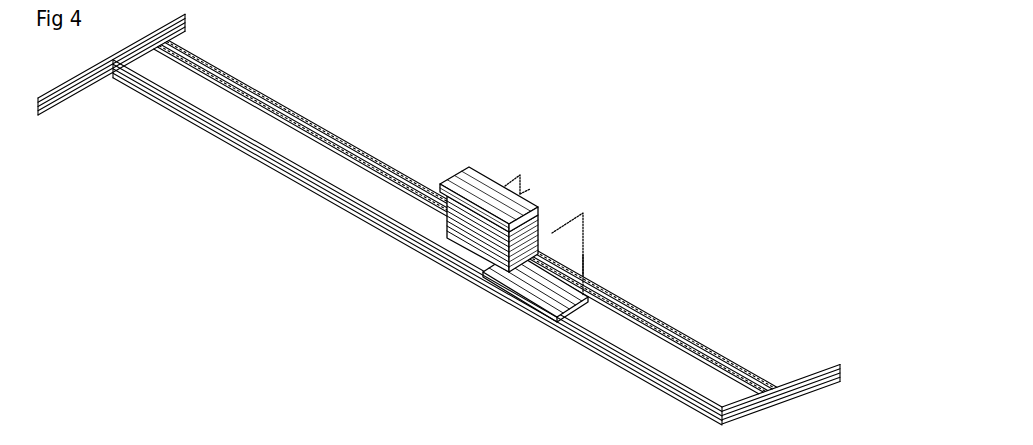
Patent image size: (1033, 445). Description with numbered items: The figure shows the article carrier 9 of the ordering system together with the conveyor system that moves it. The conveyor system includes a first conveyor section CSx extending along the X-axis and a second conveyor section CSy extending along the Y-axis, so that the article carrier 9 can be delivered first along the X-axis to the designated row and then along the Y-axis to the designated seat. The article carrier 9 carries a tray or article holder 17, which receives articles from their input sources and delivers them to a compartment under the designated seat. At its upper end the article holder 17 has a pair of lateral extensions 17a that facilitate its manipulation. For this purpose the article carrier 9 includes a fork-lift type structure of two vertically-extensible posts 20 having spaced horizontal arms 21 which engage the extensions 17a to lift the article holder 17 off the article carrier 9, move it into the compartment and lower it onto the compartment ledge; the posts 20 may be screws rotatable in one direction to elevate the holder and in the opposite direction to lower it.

The article carrier 9 is at (538, 276).
The article holder 17 is at (485, 223).
The lateral extensions 17a is at (471, 168).
The vertically-extensible posts 20 is at (526, 192).
The horizontal arms 21 is at (507, 181).
The first conveyor section CSx is at (80, 91).
The second conveyor section CSy is at (728, 376).